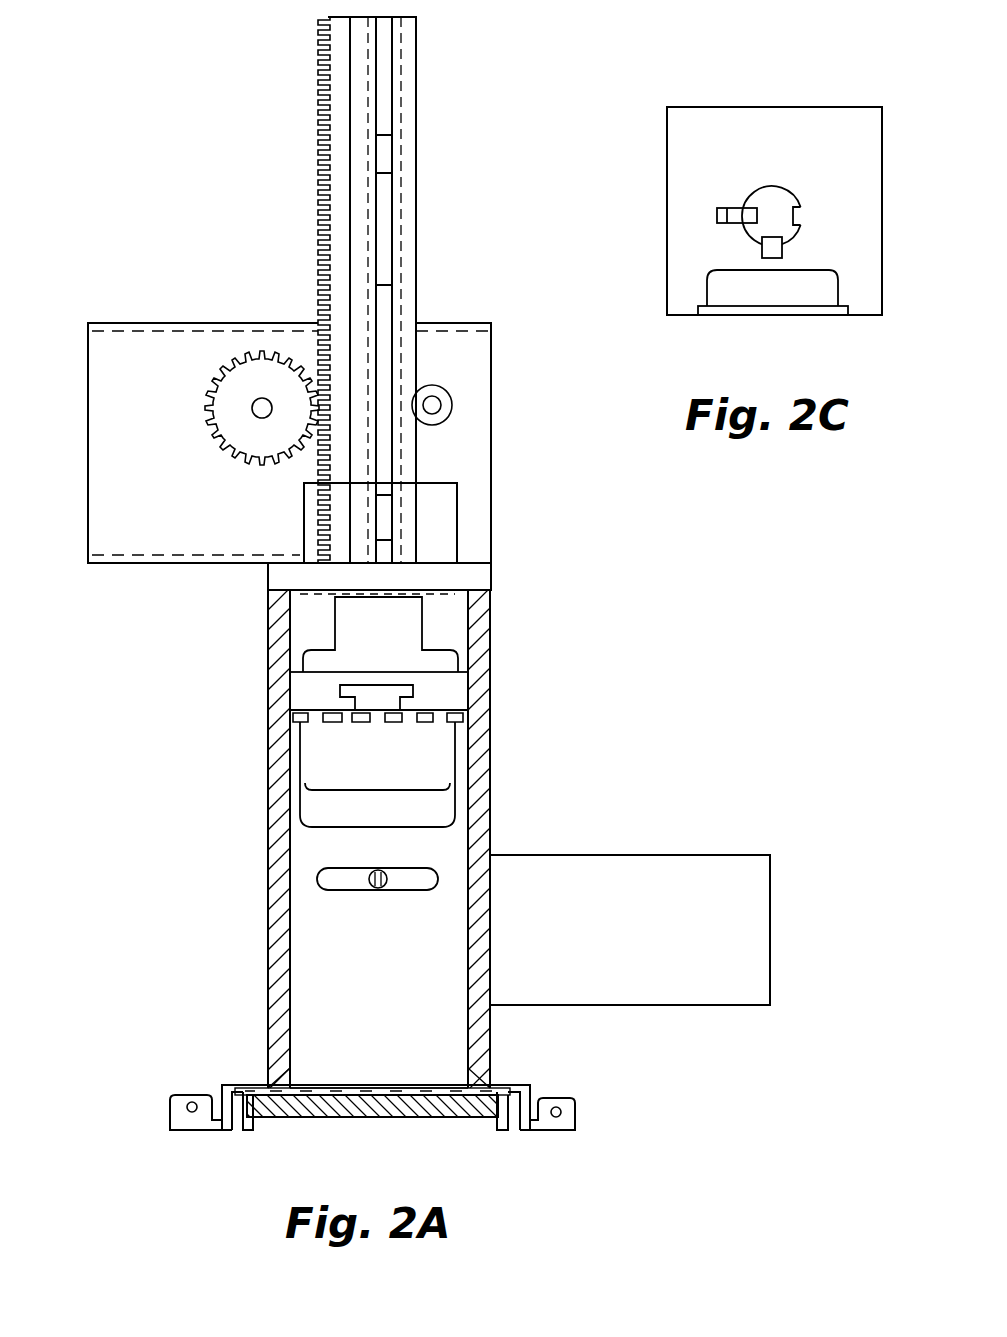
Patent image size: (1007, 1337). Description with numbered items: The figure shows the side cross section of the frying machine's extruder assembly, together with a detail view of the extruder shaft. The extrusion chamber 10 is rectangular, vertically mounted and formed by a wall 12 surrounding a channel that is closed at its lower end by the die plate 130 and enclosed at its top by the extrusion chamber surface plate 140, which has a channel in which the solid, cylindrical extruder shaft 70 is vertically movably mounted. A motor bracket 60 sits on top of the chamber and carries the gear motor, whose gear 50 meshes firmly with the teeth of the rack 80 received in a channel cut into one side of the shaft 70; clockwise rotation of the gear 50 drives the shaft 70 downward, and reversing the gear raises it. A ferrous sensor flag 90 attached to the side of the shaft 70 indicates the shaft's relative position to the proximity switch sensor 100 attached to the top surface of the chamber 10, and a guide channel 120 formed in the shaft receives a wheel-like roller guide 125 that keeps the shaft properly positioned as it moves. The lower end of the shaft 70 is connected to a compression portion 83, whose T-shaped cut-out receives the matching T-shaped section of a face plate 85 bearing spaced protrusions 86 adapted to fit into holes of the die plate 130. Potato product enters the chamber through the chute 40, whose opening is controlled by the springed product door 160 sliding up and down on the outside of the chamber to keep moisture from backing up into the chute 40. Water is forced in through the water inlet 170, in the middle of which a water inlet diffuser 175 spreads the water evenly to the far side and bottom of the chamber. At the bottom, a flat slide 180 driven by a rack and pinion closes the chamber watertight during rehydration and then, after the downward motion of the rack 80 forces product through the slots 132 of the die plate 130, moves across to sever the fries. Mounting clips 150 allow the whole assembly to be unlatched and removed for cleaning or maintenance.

In FIG. 2A, the extrusion chamber 10 is at (312, 930).
In FIG. 2A, the wall 12 is at (268, 765).
In FIG. 2A, the chute 40 is at (430, 810).
In FIG. 2A, the gear 50 is at (220, 410).
In FIG. 2A, the motor bracket 60 is at (147, 350).
In FIG. 2A, the extruder shaft 70 is at (410, 90).
In FIG. 2C, the extruder shaft 70 is at (776, 200).
In FIG. 2A, the rack 80 is at (342, 173).
In FIG. 2C, the rack 80 is at (720, 210).
In FIG. 2A, the compression portion 83 is at (455, 688).
In FIG. 2A, the face plate 85 is at (443, 707).
In FIG. 2A, the protrusions 86 is at (428, 724).
In FIG. 2A, the sensor flag 90 is at (383, 155).
In FIG. 2C, the sensor flag 90 is at (762, 247).
In FIG. 2A, the proximity switch sensor 100 is at (452, 505).
In FIG. 2C, the guide channel 120 is at (798, 214).
In FIG. 2A, the roller guide 125 is at (445, 405).
In FIG. 2A, the die plate 130 is at (420, 1088).
In FIG. 2A, the slots 132 is at (345, 1088).
In FIG. 2A, the extrusion chamber surface plate 140 is at (478, 578).
In FIG. 2A, the mounting clips 150 is at (191, 1095).
In FIG. 2A, the springed product door 160 is at (425, 768).
In FIG. 2A, the water inlet 170 is at (342, 868).
In FIG. 2A, the water inlet diffuser 175 is at (362, 893).
In FIG. 2A, the slide 180 is at (320, 1117).